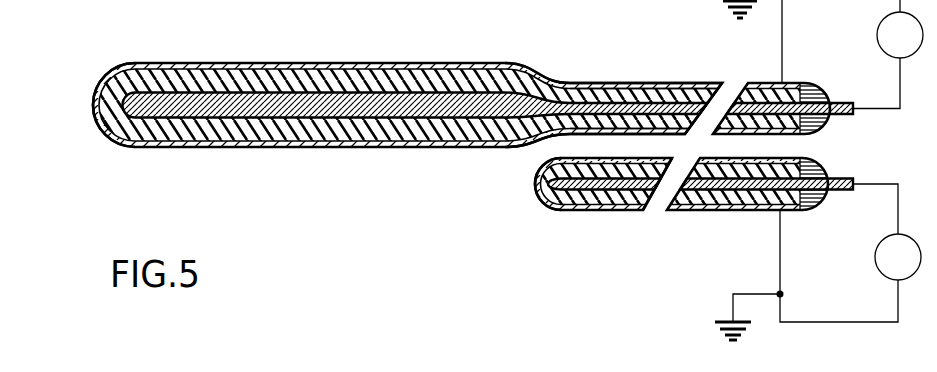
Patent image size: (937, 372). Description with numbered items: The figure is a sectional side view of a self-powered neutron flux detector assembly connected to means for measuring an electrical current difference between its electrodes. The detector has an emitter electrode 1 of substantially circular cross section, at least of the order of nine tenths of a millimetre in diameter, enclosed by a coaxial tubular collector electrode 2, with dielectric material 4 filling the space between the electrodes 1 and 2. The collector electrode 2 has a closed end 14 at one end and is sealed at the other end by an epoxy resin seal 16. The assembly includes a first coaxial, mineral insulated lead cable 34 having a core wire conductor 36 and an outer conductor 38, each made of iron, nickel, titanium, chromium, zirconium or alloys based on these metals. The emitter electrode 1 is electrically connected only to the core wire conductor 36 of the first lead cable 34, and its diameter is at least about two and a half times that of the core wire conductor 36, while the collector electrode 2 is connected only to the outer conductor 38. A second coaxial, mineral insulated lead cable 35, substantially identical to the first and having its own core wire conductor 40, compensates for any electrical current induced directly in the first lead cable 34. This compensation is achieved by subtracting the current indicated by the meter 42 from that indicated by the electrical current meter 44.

The emitter electrode 1 is at (267, 112).
The tubular collector electrode 2 is at (308, 140).
The dielectric material 4 is at (355, 135).
The closed end 14 is at (100, 127).
The epoxy resin seal 16 is at (826, 163).
The first coaxial mineral insulated lead cable 34 is at (532, 67).
The core wire conductor 36 is at (598, 87).
The outer conductor 38 is at (647, 87).
The core wire conductor 40 is at (562, 210).
The second coaxial mineral insulated lead cable 35 is at (598, 212).
The meter 42 is at (818, 262).
The electrical current meter 44 is at (823, 54).